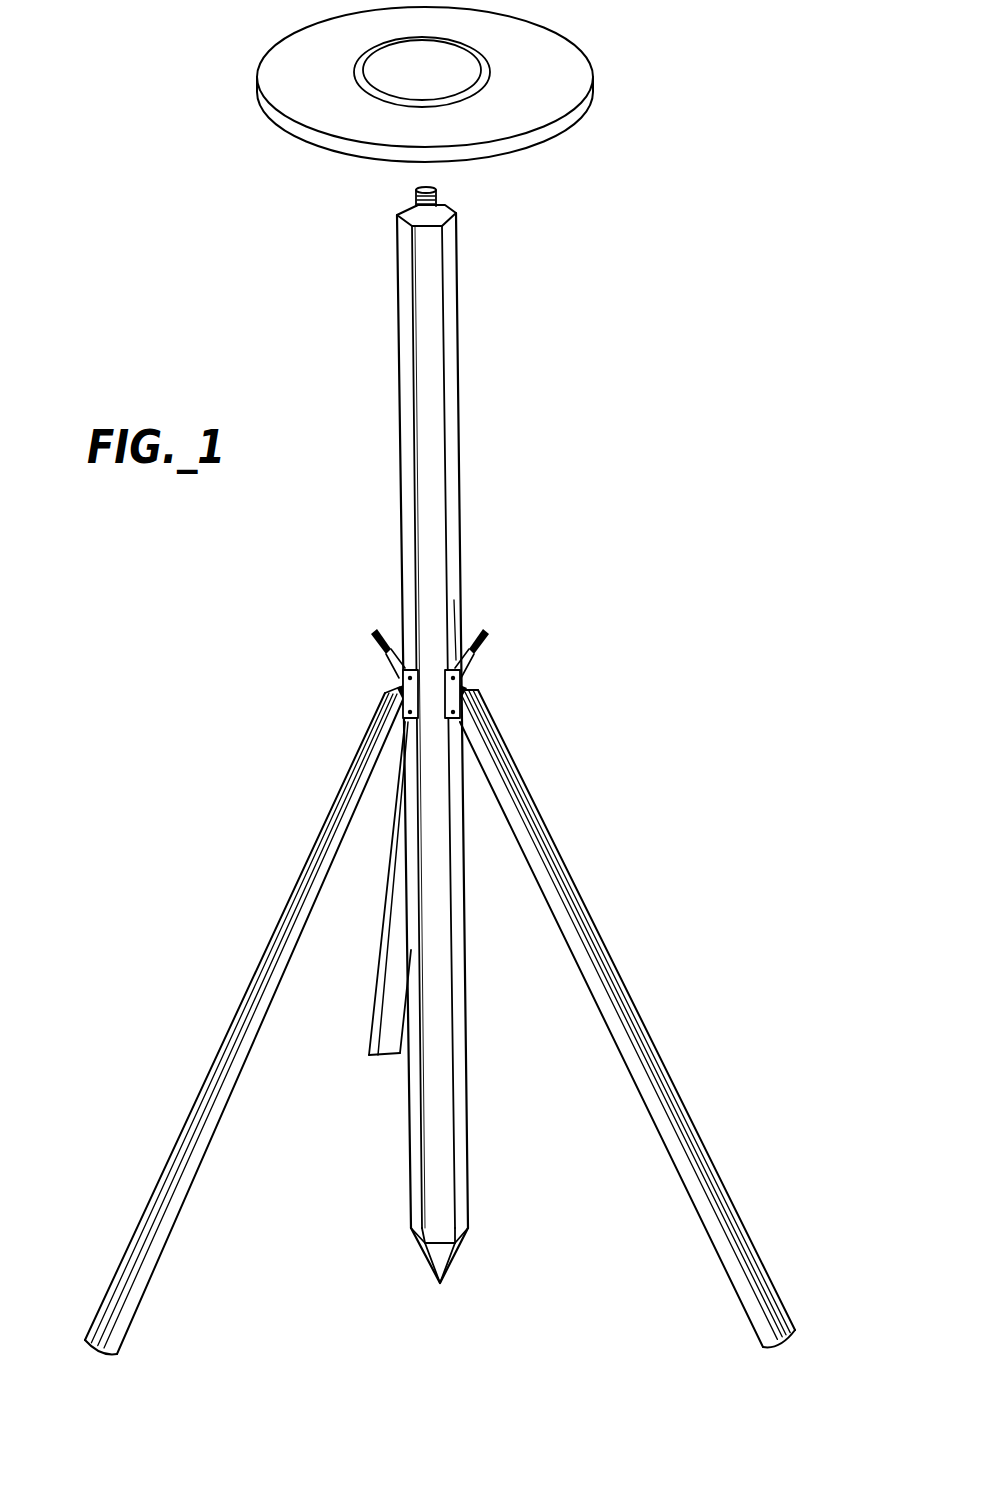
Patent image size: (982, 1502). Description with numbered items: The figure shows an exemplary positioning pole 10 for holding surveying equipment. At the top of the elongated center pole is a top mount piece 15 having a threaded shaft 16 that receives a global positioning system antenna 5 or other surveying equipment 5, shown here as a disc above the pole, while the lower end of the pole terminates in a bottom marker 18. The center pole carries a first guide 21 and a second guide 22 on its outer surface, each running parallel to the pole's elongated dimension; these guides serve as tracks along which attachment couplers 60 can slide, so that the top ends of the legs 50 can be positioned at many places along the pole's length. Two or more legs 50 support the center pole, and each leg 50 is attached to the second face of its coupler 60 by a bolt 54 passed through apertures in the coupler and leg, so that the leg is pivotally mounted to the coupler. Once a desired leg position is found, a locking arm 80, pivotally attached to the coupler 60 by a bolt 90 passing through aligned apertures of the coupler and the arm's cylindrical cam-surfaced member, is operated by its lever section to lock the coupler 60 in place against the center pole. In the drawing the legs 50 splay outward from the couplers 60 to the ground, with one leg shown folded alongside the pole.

The global positioning system (GPS) antenna 5 is at (264, 124).
The positioning pole 10 is at (278, 284).
The top mount piece 15 is at (407, 214).
The threaded stud 16 is at (440, 197).
The bottom marker 18 is at (437, 1262).
The first guide 21 is at (404, 574).
The second guide 22 is at (456, 573).
The leg 50 is at (326, 818).
The bolt 54 is at (462, 716).
The attachment coupler 60 is at (398, 683).
The locking arm 80 is at (375, 645).
The bolt 90 is at (460, 640).